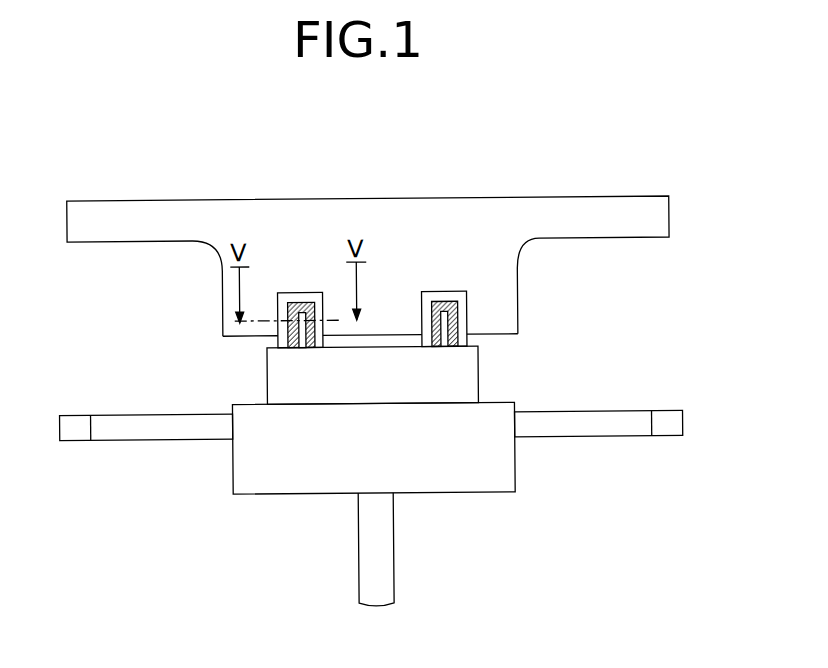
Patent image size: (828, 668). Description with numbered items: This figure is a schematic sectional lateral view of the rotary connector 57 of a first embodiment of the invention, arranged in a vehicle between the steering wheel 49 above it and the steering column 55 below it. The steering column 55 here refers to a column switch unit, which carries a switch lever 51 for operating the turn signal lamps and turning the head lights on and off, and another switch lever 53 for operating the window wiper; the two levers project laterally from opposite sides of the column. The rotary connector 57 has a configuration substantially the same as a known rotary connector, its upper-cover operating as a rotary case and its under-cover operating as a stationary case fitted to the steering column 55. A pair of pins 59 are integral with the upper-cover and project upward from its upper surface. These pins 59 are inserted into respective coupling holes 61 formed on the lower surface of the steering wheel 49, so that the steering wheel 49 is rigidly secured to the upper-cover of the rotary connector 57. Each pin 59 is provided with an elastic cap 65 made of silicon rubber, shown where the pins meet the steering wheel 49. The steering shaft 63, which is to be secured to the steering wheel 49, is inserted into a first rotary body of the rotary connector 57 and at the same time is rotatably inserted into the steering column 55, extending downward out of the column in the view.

The steering wheel 49 is at (402, 199).
The switch lever 51 is at (587, 428).
The switch lever 53 is at (153, 436).
The steering column 55 is at (280, 485).
The rotary connector 57 is at (468, 380).
The pins 59 is at (292, 305).
The coupling holes 61 is at (318, 291).
The steering shaft 63 is at (382, 552).
The elastic cap 65 is at (283, 345).